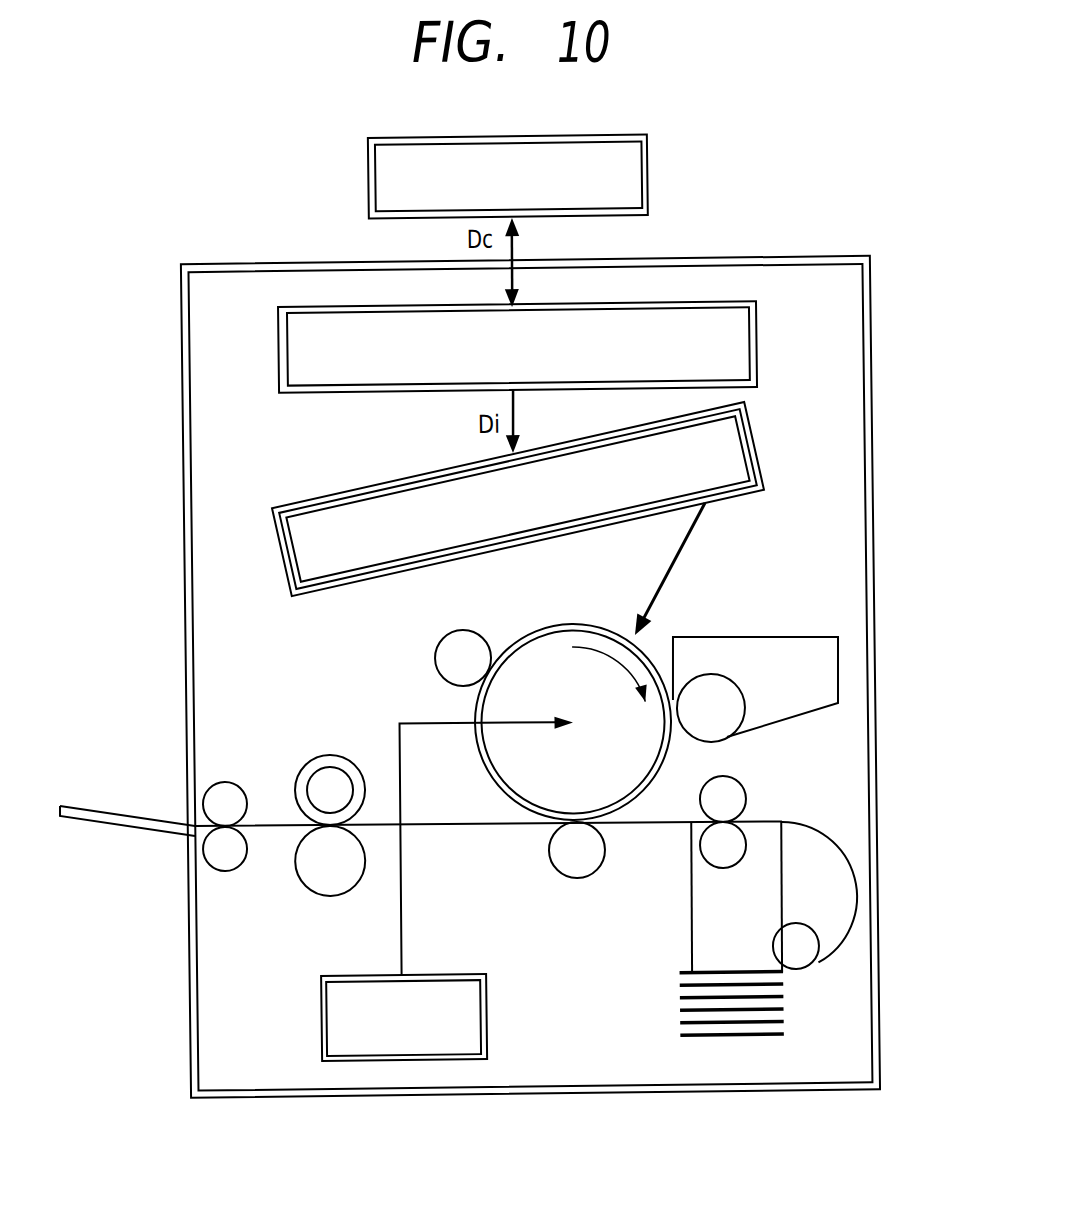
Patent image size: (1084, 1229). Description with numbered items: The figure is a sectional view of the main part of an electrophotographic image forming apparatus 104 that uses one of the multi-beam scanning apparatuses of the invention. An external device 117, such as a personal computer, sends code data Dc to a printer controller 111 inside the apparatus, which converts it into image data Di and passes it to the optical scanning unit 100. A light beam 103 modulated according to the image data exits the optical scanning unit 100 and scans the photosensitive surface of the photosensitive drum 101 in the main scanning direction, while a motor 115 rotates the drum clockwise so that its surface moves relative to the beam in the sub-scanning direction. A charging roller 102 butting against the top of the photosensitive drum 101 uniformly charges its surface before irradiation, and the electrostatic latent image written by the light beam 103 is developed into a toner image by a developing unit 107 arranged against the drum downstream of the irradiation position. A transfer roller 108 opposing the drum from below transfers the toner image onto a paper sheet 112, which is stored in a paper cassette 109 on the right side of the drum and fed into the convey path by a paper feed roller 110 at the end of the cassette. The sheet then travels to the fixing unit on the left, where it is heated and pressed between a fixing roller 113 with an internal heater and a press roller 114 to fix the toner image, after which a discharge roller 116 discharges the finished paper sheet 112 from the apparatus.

The optical scanning unit 100 is at (367, 485).
The photosensitive drum 101 is at (654, 750).
The charging roller 102 is at (462, 639).
The light beam 103 is at (681, 567).
The image forming apparatus 104 is at (829, 244).
The developing unit 107 is at (838, 659).
The transfer roller 108 is at (581, 873).
The paper cassette 109 is at (662, 1019).
The paper feed roller 110 is at (789, 950).
The printer controller 111 is at (761, 333).
The paper sheet 112 is at (446, 826).
The fixing roller 113 is at (321, 778).
The press roller 114 is at (306, 869).
The motor 115 is at (317, 1015).
The discharge roller 116 is at (234, 791).
The external device 117 is at (654, 158).